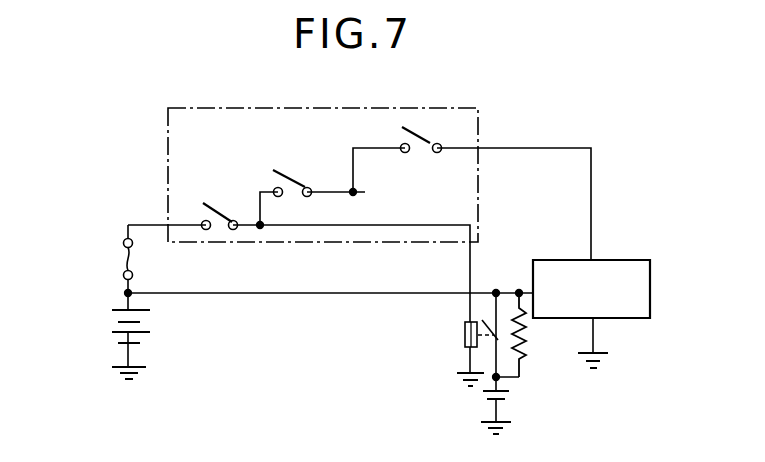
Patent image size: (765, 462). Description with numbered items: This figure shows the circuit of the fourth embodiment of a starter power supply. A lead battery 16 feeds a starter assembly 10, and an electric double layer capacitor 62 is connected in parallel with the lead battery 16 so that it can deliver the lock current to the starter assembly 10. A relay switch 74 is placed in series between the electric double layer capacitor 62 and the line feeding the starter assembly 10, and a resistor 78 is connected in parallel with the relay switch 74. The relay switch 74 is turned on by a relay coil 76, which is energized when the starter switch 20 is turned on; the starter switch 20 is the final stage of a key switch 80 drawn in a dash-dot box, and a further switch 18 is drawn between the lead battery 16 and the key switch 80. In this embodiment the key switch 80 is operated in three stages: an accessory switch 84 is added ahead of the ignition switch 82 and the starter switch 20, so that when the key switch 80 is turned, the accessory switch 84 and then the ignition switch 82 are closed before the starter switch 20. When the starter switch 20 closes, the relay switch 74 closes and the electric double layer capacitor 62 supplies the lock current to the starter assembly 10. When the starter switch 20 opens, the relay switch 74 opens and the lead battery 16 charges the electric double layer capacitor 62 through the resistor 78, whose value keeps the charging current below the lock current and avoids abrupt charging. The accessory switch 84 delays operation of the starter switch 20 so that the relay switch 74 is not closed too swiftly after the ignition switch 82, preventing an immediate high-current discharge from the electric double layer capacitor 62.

The key switch 80 is at (168, 133).
The accessory switch 84 is at (217, 203).
The ignition switch 82 is at (292, 182).
The starter switch 20 is at (416, 153).
The ignition switch 18 is at (123, 254).
The lead battery 16 is at (133, 326).
The starter assembly 10 is at (620, 260).
The relay coil 76 is at (464, 330).
The relay switch 74 is at (496, 338).
The resistor 78 is at (525, 333).
The electric double layer capacitor 62 is at (483, 394).